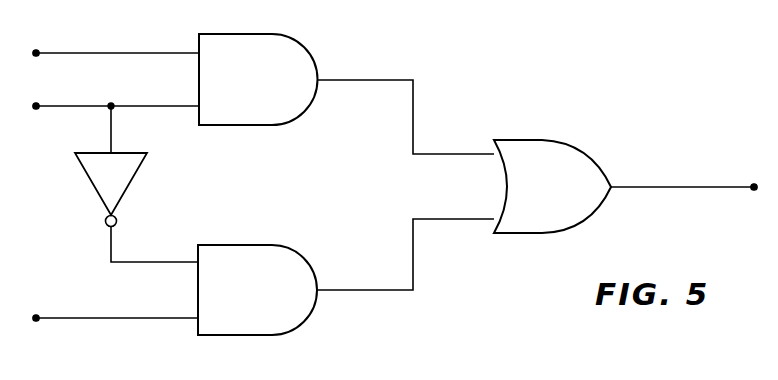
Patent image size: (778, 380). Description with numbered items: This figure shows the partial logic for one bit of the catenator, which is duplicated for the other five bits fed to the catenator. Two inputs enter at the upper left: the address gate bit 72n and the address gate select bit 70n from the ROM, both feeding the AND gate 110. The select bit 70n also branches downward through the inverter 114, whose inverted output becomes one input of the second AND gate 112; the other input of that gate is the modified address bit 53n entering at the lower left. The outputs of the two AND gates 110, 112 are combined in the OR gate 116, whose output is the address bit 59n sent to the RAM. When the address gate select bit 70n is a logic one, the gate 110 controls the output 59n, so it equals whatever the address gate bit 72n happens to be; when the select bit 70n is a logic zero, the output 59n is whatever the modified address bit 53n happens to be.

The address gate bit 72n is at (72, 53).
The address gate select bit 70n is at (57, 106).
The modified address bit 53n is at (118, 319).
The inverter 114 is at (121, 197).
The AND gate 110 is at (311, 59).
The AND gate 112 is at (285, 247).
The OR gate 116 is at (583, 158).
The output to RAM 59n is at (719, 178).